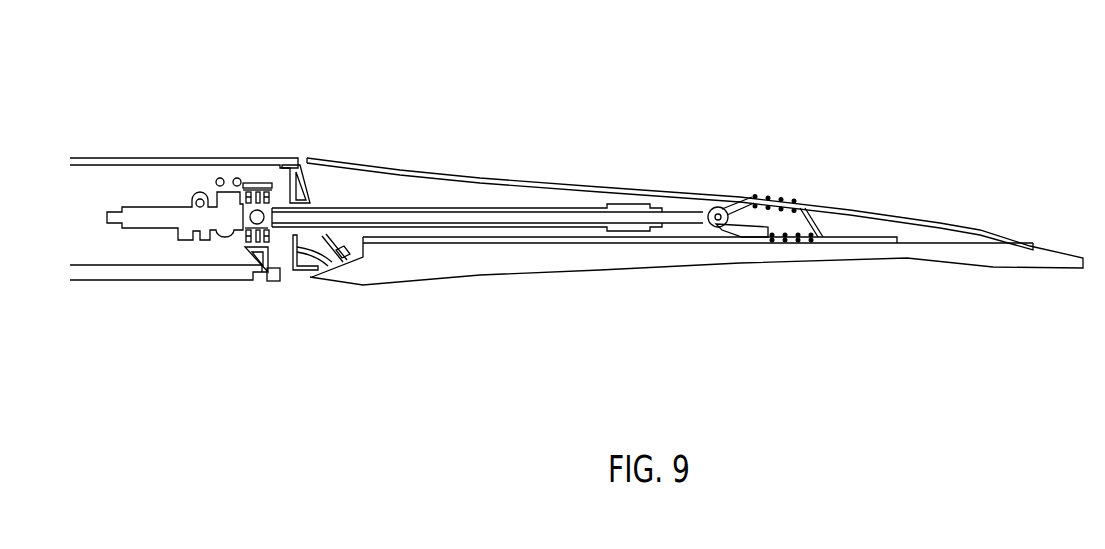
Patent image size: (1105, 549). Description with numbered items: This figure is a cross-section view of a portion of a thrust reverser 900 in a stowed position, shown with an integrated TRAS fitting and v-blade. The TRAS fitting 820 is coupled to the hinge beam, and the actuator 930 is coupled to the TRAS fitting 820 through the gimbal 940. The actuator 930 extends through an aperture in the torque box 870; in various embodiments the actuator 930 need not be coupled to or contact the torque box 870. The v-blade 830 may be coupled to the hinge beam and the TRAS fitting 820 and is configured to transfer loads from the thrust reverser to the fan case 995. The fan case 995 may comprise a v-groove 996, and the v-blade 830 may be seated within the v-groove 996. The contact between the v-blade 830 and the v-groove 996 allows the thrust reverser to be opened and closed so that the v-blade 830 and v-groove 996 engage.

The thrust reverser 900 is at (930, 84).
The TRAS fitting 820 is at (253, 183).
The torque box 870 is at (308, 193).
The actuator 930 is at (440, 210).
The gimbal 940 is at (245, 239).
The fan case 995 is at (221, 281).
The v-groove 996 is at (268, 273).
The v-blade 830 is at (274, 262).